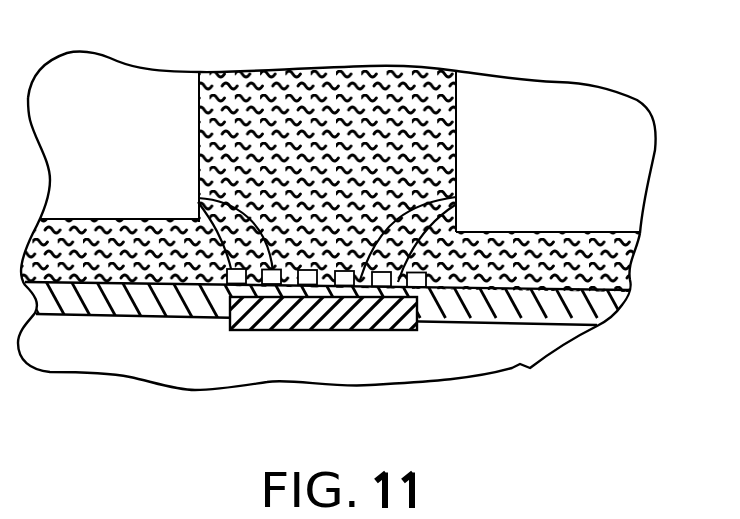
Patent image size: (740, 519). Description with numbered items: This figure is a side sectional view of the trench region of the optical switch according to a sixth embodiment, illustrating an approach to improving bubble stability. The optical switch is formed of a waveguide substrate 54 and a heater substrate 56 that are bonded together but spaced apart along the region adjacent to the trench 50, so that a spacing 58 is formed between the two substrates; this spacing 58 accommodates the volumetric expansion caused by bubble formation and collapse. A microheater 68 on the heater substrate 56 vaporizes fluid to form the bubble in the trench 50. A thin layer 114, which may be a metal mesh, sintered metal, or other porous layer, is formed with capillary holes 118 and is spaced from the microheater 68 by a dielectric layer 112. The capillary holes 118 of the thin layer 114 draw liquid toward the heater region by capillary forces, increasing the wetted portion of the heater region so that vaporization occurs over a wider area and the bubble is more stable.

The trench 50 is at (432, 82).
The waveguide substrate 54 is at (643, 125).
The heater substrate 56 is at (517, 365).
The spacing 58 is at (630, 265).
The microheater 68 is at (353, 331).
The dielectric layer 112 is at (607, 303).
The thin layer 114 is at (199, 199).
The capillary holes 118 is at (457, 197).